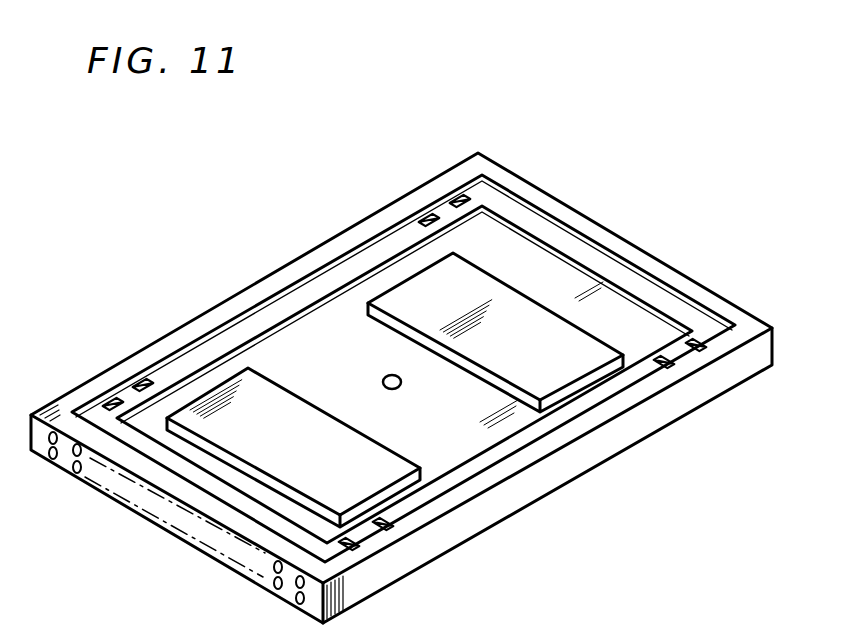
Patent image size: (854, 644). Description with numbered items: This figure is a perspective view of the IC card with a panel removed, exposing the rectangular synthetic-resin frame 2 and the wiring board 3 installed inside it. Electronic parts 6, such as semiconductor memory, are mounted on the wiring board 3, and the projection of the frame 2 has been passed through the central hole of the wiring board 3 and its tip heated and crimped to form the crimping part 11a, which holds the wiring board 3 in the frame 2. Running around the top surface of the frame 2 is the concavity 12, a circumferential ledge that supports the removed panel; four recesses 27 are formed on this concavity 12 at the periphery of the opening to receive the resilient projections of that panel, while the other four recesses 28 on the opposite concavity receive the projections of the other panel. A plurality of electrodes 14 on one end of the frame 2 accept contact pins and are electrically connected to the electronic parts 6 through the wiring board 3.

The frame 2 is at (672, 272).
The wiring board 3 is at (507, 248).
The electronic parts 6 is at (220, 408).
The crimping part 11a is at (382, 377).
The concavity 12 is at (575, 248).
The electrodes 14 is at (76, 471).
The recesses 27 is at (455, 195).
The recesses 28 is at (417, 213).